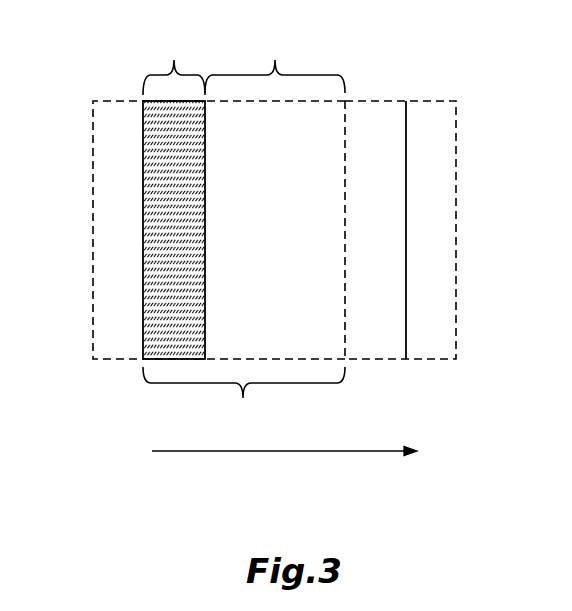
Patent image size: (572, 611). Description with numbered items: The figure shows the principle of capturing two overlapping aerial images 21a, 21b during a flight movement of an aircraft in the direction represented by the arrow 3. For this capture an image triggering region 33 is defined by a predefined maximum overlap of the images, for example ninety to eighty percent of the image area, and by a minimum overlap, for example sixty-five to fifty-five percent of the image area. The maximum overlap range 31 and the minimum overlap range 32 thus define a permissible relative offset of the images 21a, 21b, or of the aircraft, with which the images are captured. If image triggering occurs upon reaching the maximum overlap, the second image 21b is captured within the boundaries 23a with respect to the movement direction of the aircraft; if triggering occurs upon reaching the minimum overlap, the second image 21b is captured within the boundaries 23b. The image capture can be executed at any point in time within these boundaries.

The arrow 3 is at (235, 451).
The first aerial image 21a is at (103, 359).
The second aerial image 21b is at (422, 359).
The boundaries at maximum overlap 23a is at (142, 105).
The boundaries at minimum overlap 23b is at (205, 225).
The maximum overlap range 31 is at (244, 399).
The minimum overlap range 32 is at (275, 63).
The image triggering region 33 is at (174, 64).